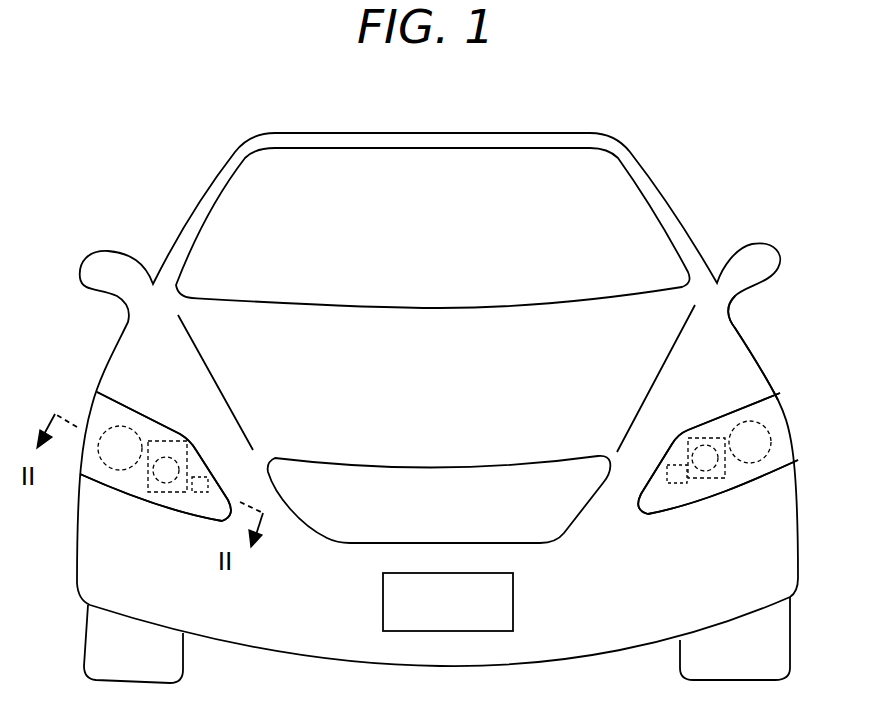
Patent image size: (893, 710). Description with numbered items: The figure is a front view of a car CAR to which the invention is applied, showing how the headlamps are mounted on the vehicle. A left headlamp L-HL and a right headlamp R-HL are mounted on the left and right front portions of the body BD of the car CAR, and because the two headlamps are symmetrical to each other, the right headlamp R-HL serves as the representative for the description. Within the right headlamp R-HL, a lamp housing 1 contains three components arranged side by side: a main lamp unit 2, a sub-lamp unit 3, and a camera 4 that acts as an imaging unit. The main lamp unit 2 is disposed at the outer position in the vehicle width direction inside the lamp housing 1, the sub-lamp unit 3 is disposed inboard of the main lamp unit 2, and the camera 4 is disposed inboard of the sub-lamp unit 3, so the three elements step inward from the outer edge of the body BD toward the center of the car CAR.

The lamp housing 1 is at (161, 508).
The main lamp unit 2 is at (123, 426).
The sub-lamp unit 3 is at (170, 452).
The camera 4 is at (208, 481).
The car CAR is at (667, 202).
The body BD is at (728, 342).
The right headlamp R-HL is at (204, 441).
The left headlamp L-HL is at (655, 447).